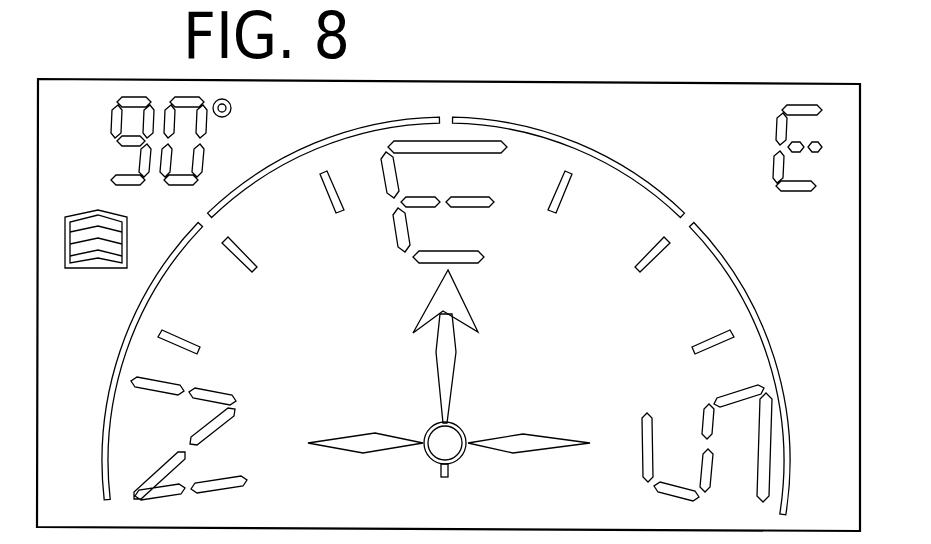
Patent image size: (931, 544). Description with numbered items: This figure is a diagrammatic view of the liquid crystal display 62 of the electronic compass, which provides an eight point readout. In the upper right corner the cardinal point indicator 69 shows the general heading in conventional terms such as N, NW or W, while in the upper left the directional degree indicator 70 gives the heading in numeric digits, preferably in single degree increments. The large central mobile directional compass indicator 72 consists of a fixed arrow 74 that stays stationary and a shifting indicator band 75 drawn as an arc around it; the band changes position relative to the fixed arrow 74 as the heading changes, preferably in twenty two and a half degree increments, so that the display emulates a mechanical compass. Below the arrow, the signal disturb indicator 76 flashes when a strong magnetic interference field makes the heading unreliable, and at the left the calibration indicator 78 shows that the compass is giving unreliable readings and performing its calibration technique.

The liquid crystal display 62 is at (98, 60).
The directional degree indicator 70 is at (209, 151).
The calibration indicator 78 is at (62, 198).
The mobile directional compass indicator 72 is at (679, 168).
The shifting indicator band 75 is at (783, 348).
The cardinal point indicator 69 is at (803, 193).
The fixed arrow 74 is at (457, 357).
The signal disturb indicator 76 is at (575, 398).